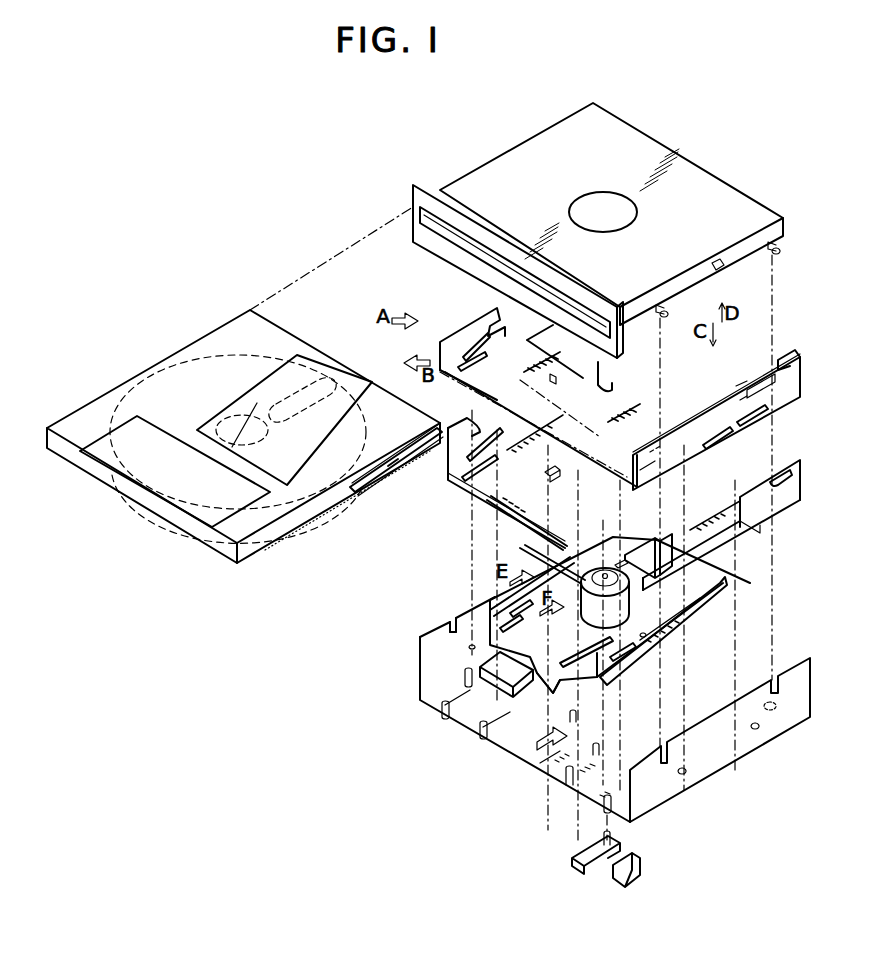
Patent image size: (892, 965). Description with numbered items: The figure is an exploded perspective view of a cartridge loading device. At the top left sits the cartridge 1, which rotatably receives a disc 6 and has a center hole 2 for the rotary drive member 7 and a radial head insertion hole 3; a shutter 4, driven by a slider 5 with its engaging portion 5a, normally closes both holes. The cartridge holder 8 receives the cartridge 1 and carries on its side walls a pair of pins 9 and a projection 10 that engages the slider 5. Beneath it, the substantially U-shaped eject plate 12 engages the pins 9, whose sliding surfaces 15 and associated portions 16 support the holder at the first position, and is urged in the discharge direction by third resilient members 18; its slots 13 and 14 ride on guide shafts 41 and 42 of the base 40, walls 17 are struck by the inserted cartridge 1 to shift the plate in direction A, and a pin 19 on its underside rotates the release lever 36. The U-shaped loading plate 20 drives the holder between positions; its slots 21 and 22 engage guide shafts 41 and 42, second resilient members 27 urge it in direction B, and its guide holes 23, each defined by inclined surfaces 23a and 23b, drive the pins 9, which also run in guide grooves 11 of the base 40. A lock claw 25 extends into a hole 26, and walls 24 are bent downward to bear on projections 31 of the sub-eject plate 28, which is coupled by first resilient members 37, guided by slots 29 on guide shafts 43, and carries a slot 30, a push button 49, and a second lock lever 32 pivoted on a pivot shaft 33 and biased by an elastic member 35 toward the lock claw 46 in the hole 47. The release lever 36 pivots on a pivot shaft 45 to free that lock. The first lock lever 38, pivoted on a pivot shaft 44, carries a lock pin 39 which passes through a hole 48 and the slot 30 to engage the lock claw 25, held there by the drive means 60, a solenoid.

The cartridge 1 is at (215, 330).
The center hole 2 is at (190, 370).
The head insertion hole 3 is at (293, 387).
The shutter 4 is at (303, 410).
The slider 5 is at (385, 465).
The shutter engaging portion 5a is at (395, 465).
The disc 6 is at (130, 378).
The rotary drive member 7 is at (632, 595).
The cartridge holder 8 is at (635, 145).
The pins 9 is at (777, 250).
The projection 10 is at (724, 267).
The guide grooves 11 is at (448, 625).
The eject plate 12 is at (665, 430).
The slots 13 is at (462, 352).
The slots 14 is at (472, 335).
The sliding surface 15 is at (648, 455).
The engaging portions 16 is at (640, 470).
The walls 17 is at (788, 352).
The third resilient members 18 is at (530, 372).
The pin 19 is at (557, 378).
The loading plate 20 is at (507, 523).
The slots 21 is at (480, 486).
The slots 22 is at (462, 476).
The guide holes 23 is at (462, 455).
The inclined surface 23a is at (470, 420).
The inclined surface 23b is at (505, 398).
The walls 24 is at (560, 473).
The lock claw 25 is at (622, 560).
The hole 26 is at (666, 540).
The second resilient members 27 is at (558, 423).
The sub-eject plate 28 is at (700, 620).
The slots 29 is at (530, 575).
The slot 30 is at (640, 650).
The projections 31 is at (690, 620).
The second lock lever 32 is at (510, 605).
The pivot shaft 33 is at (495, 622).
The elastic member 35 is at (552, 682).
The release lever 36 is at (557, 567).
The first resilient members 37 is at (520, 520).
The first lock lever 38 is at (572, 870).
The lock pin 39 is at (613, 840).
The base 40 is at (490, 740).
The guide shafts 41 is at (463, 680).
The guide shafts 42 is at (469, 648).
The guide shafts 43 is at (565, 783).
The pivot shaft 44 is at (603, 800).
The pivot shaft 45 is at (578, 718).
The lock claw 46 is at (537, 742).
The hole 47 is at (545, 766).
The hole 48 is at (602, 752).
The push button 49 is at (505, 688).
The drive means 60 is at (642, 867).